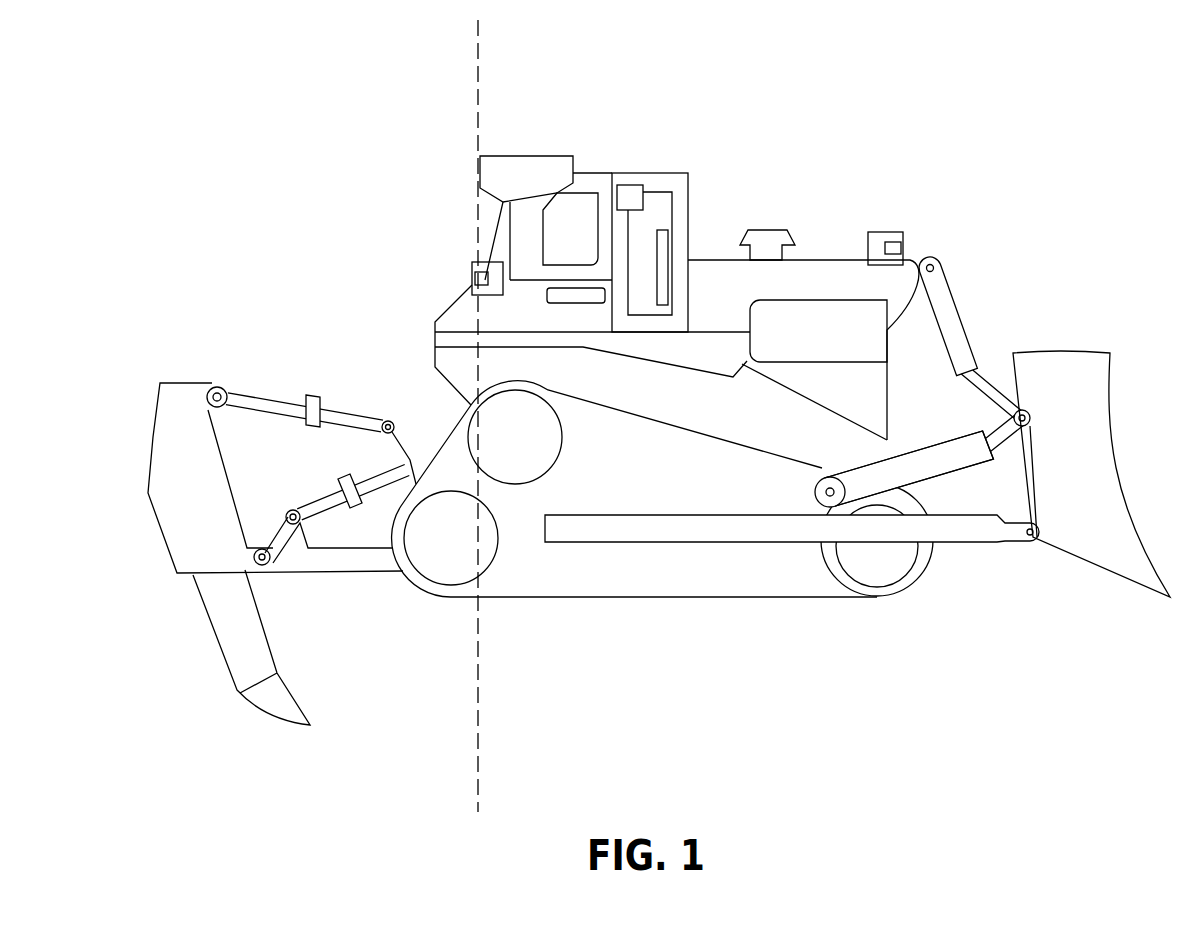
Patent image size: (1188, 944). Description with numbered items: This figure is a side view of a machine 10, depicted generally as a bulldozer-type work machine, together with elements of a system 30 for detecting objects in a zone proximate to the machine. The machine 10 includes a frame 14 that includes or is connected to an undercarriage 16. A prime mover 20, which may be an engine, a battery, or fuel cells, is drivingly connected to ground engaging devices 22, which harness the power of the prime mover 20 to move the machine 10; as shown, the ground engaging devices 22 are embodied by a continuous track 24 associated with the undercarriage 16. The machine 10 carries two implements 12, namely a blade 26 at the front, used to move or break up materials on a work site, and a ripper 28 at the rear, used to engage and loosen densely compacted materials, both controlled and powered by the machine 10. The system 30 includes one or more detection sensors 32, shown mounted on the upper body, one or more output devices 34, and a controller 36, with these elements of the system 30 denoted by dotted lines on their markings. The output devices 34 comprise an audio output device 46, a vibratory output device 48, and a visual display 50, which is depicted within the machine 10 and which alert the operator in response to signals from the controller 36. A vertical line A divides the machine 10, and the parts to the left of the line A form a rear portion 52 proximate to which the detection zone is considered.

The machine 10 is at (997, 245).
The implements 12 is at (663, 520).
The frame 14 is at (437, 330).
The undercarriage 16 is at (937, 378).
The prime mover 20 is at (933, 293).
The ground engaging devices 22 is at (715, 515).
The continuous track 24 is at (792, 528).
The blade 26 is at (1060, 351).
The ripper 28 is at (165, 383).
The system for detecting objects 30 is at (830, 197).
The detection sensors 32 is at (470, 282).
The output devices 34 is at (655, 274).
The controller 36 is at (744, 264).
The audio output device 46 is at (632, 183).
The vibratory output device 48 is at (578, 304).
The visual display 50 is at (677, 245).
The rear portion 52 is at (410, 388).
The line A is at (477, 75).